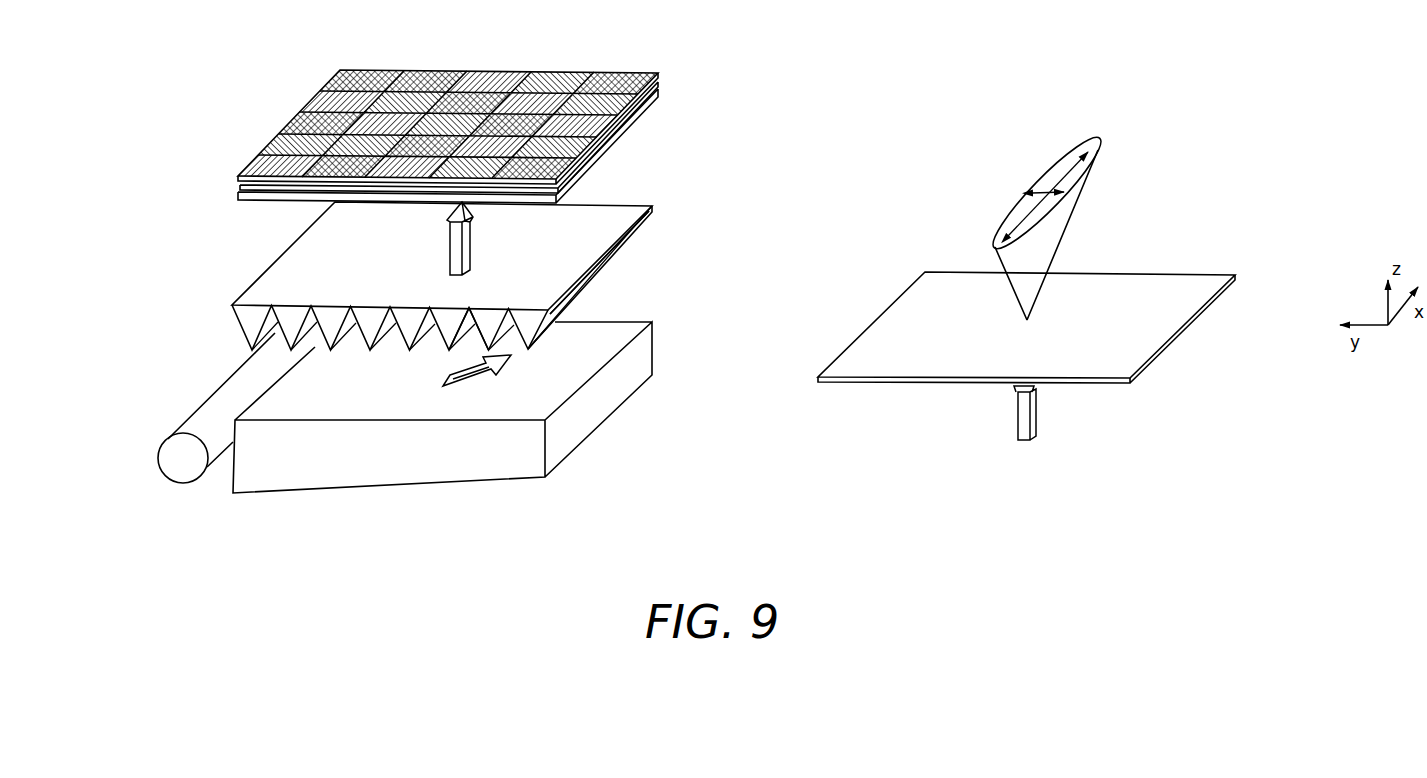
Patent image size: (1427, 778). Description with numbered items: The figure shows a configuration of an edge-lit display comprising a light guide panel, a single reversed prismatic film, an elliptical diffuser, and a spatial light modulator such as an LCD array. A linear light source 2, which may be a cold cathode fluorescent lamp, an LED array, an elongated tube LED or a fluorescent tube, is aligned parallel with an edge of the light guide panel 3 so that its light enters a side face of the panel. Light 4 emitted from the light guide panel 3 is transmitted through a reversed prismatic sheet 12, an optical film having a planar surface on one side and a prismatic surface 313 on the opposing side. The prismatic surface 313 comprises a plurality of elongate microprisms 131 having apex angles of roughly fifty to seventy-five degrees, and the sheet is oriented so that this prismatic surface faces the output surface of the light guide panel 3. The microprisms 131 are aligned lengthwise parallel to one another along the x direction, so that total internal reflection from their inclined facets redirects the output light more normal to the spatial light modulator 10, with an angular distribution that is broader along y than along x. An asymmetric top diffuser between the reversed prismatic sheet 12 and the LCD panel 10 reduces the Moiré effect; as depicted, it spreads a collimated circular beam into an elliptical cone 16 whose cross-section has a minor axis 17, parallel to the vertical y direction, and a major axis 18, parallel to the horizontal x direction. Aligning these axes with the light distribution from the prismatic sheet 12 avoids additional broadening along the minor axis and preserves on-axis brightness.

The linear light source 2 is at (180, 410).
The light guide panel 3 is at (443, 407).
The light emitted from the light guide panel 4 is at (452, 368).
The spatial light modulator 10 is at (332, 102).
The reversed prismatic sheet 12 is at (412, 303).
The elongate microprisms 131 is at (470, 334).
The prismatic surface 313 is at (632, 250).
The elliptical cone 16 is at (1042, 282).
The minor axis 17 is at (1034, 182).
The major axis 18 is at (1098, 150).